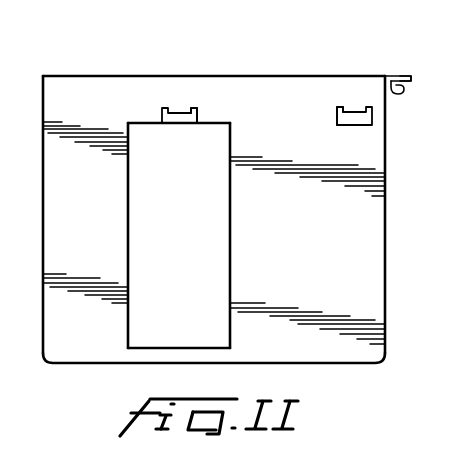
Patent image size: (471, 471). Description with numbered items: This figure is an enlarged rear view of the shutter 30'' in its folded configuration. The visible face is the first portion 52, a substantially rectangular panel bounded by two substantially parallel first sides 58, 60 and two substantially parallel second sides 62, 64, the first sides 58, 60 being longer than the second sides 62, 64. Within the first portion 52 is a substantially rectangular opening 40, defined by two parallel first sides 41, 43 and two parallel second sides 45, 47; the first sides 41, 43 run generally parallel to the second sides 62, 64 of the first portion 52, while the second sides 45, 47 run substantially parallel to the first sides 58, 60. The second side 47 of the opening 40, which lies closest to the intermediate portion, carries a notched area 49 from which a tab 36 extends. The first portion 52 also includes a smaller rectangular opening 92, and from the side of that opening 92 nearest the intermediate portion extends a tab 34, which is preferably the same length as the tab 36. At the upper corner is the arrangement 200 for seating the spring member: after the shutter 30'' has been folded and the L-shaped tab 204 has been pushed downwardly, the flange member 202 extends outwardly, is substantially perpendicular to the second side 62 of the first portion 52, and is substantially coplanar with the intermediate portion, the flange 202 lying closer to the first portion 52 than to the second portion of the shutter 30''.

The shutter 30'' is at (212, 260).
The first side 60 is at (282, 78).
The second side 62 is at (383, 284).
The second side 64 is at (44, 226).
The first portion 52 is at (72, 341).
The opening 40 is at (202, 235).
The first side 41 is at (229, 264).
The first side 43 is at (130, 244).
The second side 45 is at (165, 347).
The second side 47 is at (144, 125).
The tab 36 is at (175, 113).
The notched area 49 is at (191, 117).
The tab 34 is at (357, 113).
The rectangular opening 92 is at (344, 122).
The first side 58 is at (282, 362).
The arrangement for seating the spring member 200 is at (400, 68).
The flange member 202 is at (412, 77).
The L-shaped tab 204 is at (399, 95).